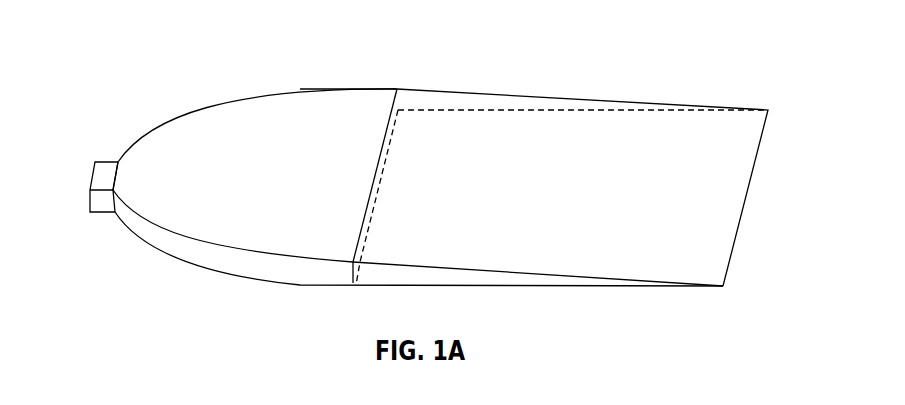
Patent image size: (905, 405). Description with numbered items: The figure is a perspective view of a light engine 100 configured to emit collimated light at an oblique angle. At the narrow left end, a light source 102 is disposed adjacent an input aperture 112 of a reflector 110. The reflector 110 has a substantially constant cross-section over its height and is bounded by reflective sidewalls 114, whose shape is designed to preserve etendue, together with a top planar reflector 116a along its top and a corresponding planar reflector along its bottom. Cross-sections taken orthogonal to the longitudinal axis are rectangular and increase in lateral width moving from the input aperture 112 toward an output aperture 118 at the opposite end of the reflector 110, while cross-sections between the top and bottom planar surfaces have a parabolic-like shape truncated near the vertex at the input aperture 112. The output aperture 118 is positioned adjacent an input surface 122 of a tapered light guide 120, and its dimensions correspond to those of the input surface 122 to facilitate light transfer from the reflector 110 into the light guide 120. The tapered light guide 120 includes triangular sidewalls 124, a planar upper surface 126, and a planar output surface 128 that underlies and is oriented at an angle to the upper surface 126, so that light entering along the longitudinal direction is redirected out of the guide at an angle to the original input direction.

The light engine 100 is at (150, 40).
The light source 102 is at (105, 165).
The input aperture 112 is at (118, 173).
The reflective sidewalls 114 is at (197, 107).
The top planar reflector 116a is at (280, 110).
The reflector 110 is at (322, 118).
The output aperture 118 is at (372, 187).
The input surface 122 is at (375, 205).
The tapered light guide 120 is at (648, 145).
The planar upper surface 126 is at (583, 130).
The triangular sidewalls 124 is at (387, 278).
The planar output surface 128 is at (538, 287).